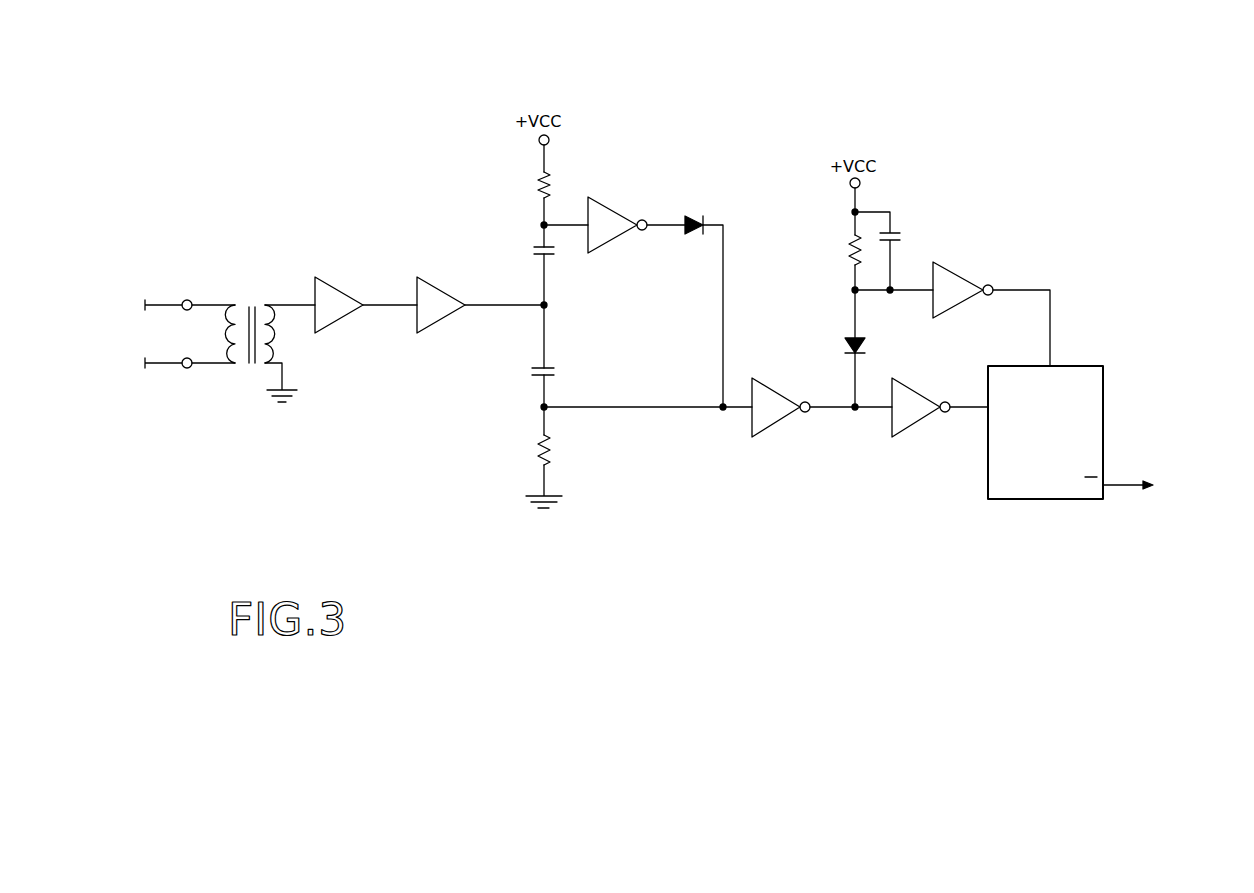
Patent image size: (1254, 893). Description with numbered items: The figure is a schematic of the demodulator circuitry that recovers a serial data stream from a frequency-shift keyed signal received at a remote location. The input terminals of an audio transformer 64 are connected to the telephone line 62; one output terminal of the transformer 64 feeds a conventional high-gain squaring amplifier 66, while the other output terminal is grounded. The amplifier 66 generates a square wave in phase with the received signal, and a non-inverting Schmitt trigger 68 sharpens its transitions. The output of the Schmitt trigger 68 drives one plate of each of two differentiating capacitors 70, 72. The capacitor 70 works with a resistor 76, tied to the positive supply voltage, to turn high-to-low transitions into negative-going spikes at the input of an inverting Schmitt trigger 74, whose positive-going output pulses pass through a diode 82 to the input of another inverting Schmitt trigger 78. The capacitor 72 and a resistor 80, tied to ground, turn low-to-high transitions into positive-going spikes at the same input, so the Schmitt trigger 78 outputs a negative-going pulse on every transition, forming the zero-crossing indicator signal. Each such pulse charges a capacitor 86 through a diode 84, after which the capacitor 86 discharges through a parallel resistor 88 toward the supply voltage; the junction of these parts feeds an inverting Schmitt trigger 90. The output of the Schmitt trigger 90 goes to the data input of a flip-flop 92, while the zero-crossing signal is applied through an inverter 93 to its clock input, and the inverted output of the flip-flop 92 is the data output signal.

The telephone line 62 is at (160, 363).
The audio transformer 64 is at (254, 305).
The high-gain squaring amplifier 66 is at (345, 292).
The non-inverting Schmitt trigger 68 is at (450, 292).
The differentiating capacitor 70 is at (534, 250).
The differentiating capacitor 72 is at (553, 372).
The inverting Schmitt trigger 74 is at (620, 208).
The resistor 76 is at (548, 176).
The inverting Schmitt trigger 78 is at (790, 416).
The resistor 80 is at (548, 445).
The diode 82 is at (690, 215).
The diode 84 is at (868, 345).
The capacitor 86 is at (902, 237).
The resistor 88 is at (848, 246).
The inverting Schmitt trigger 90 is at (965, 277).
The flip-flop 92 is at (1050, 499).
The inverter 93 is at (924, 418).